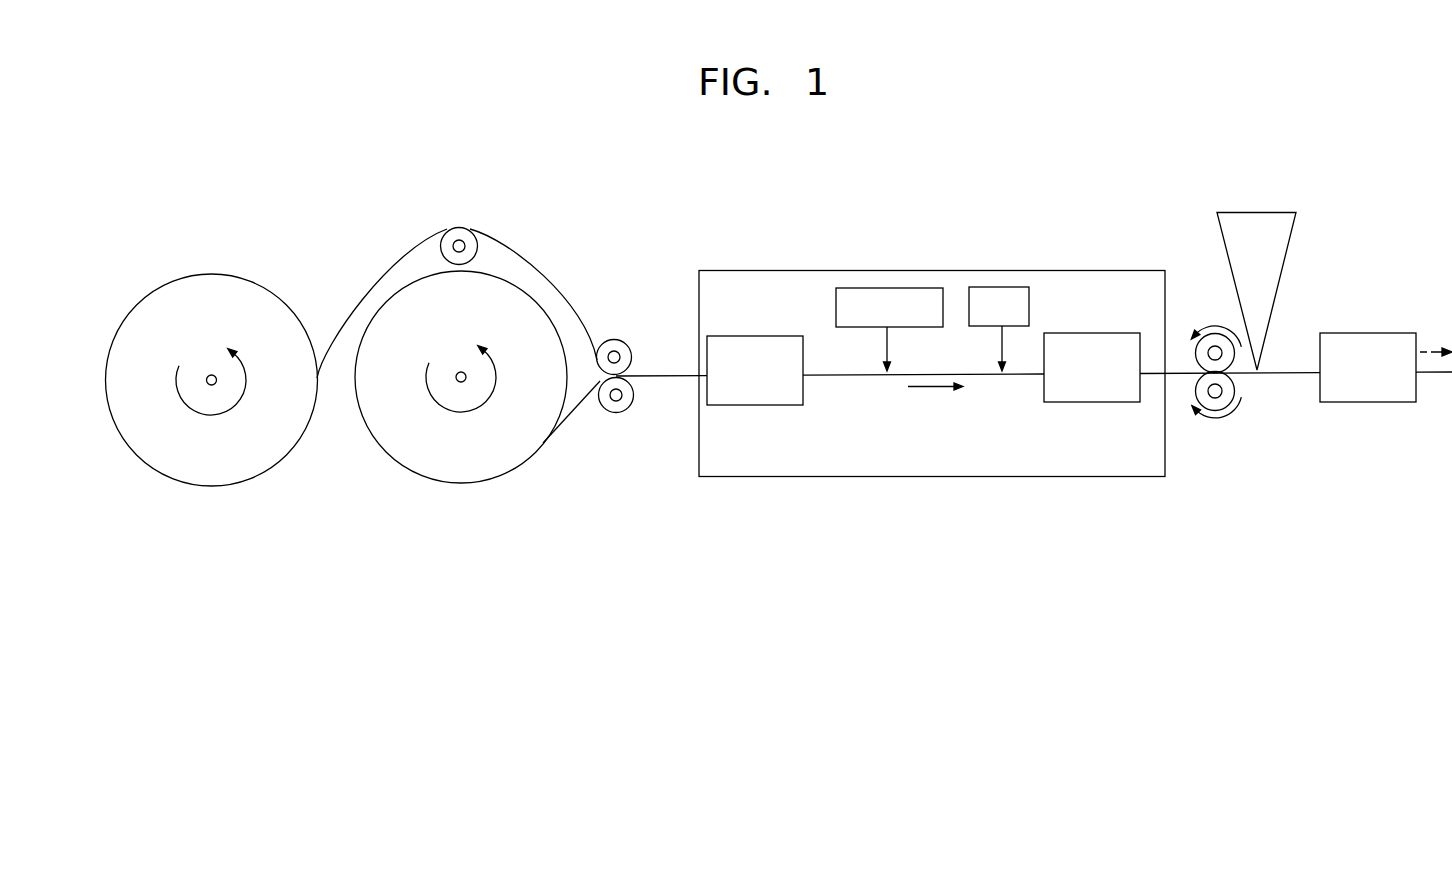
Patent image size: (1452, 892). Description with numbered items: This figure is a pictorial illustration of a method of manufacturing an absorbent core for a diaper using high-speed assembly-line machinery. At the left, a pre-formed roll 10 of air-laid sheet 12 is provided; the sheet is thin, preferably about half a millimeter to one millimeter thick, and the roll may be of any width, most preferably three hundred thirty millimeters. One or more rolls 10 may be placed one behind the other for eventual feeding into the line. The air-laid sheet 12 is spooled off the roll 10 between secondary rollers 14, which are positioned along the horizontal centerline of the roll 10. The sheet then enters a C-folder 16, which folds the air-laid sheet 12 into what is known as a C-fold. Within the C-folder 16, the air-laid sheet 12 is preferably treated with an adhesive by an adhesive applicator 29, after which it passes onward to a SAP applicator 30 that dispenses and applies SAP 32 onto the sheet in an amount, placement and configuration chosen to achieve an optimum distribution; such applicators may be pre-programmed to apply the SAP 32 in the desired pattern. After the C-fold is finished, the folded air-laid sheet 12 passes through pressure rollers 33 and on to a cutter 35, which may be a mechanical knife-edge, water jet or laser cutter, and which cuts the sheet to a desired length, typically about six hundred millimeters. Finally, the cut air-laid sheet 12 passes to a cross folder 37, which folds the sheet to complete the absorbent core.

The pre-formed roll 10 is at (212, 476).
The air-laid sheet 12 is at (657, 378).
The secondary rollers 14 is at (607, 340).
The C-folder 16 is at (723, 277).
The adhesive applicator 29 is at (885, 288).
The SAP applicator 30 is at (989, 287).
The SAP 32 is at (1003, 338).
The pressure rollers 33 is at (1215, 335).
The cutter 35 is at (1286, 237).
The cross folder 37 is at (1386, 351).